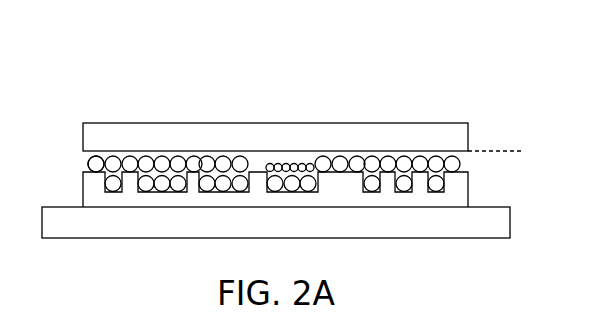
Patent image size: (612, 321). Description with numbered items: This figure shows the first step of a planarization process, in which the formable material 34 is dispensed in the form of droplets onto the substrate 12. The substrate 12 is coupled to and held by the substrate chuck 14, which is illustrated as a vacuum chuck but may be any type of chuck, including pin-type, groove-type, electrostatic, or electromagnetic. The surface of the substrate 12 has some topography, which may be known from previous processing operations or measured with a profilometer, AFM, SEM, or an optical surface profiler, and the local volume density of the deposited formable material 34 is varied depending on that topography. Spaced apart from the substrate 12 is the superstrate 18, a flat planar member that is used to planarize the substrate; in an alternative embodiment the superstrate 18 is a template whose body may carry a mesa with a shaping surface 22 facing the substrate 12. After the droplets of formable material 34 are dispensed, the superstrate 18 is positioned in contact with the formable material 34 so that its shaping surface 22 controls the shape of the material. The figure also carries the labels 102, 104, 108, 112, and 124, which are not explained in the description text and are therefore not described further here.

The substrate 12 is at (549, 129).
The substrate chuck 14 is at (270, 162).
The superstrate 18 is at (439, 25).
The shaping surface 22 is at (546, 90).
The formable material 34 is at (37, 36).
The substrate 102 is at (468, 181).
The carrier 104 is at (292, 233).
The die 108 is at (370, 123).
The bonding surface 112 is at (515, 151).
The solder bump 124 is at (88, 167).